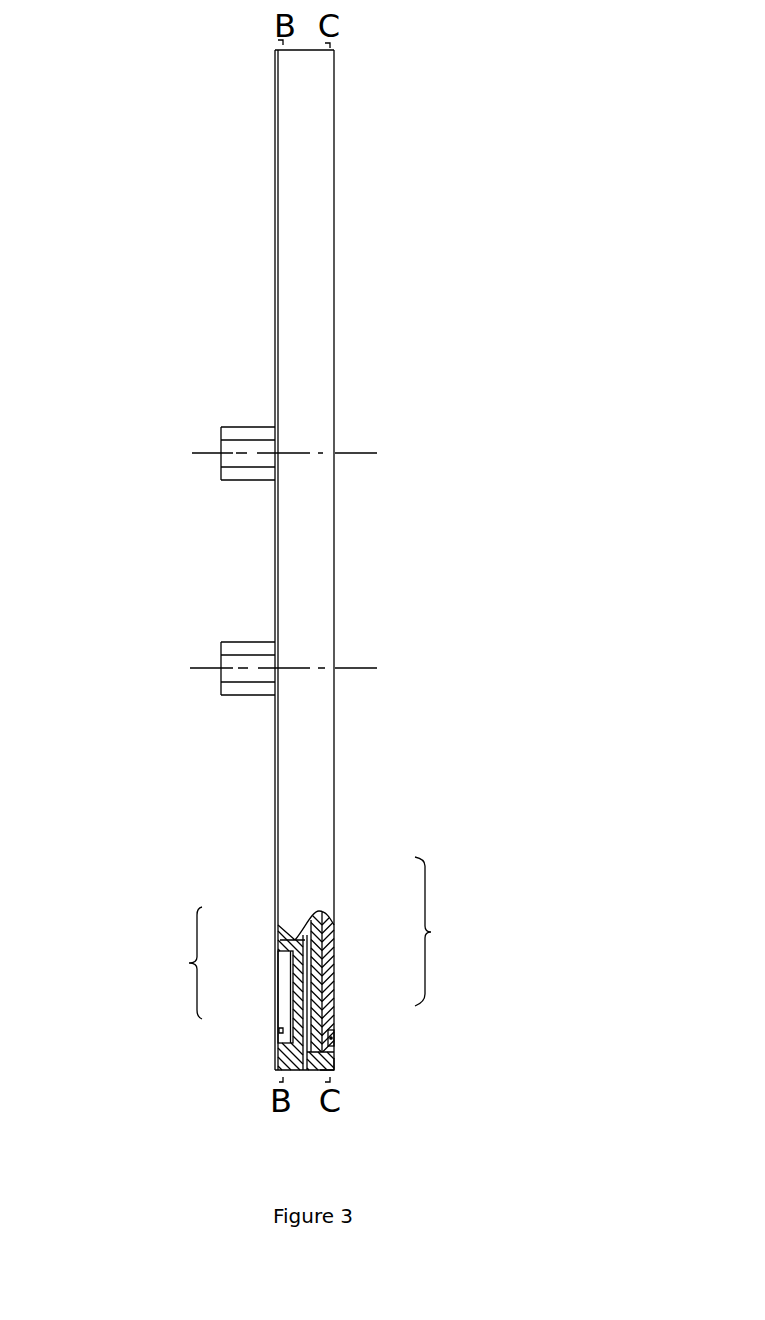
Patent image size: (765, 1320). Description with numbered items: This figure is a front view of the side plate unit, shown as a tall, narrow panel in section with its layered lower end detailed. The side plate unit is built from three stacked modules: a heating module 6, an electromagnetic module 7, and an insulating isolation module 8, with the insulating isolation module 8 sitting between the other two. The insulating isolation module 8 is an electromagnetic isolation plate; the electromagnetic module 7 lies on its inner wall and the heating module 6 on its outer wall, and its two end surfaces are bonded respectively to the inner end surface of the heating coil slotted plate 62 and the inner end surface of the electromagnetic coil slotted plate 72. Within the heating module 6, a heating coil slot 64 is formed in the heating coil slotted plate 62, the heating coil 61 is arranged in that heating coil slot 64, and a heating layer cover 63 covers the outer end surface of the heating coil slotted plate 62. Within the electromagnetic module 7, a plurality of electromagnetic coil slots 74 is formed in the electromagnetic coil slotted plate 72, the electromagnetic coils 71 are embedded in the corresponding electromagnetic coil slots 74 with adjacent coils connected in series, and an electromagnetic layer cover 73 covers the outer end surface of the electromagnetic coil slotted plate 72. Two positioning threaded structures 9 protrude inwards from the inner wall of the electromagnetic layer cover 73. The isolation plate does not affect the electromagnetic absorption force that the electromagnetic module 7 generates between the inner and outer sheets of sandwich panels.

The heating module 6 is at (439, 931).
The heating coil 61 is at (333, 973).
The heating coil slotted plate 62 is at (320, 914).
The heating layer cover 63 is at (335, 1050).
The heating coil slot 64 is at (333, 1040).
The electromagnetic module 7 is at (176, 963).
The electromagnetic coils 71 is at (293, 988).
The electromagnetic coil slotted plate 72 is at (298, 1063).
The electromagnetic layer cover 73 is at (277, 943).
The electromagnetic coil slots 74 is at (293, 1025).
The insulating isolation module 8 is at (334, 1070).
The positioning threaded structure 9 is at (255, 437).